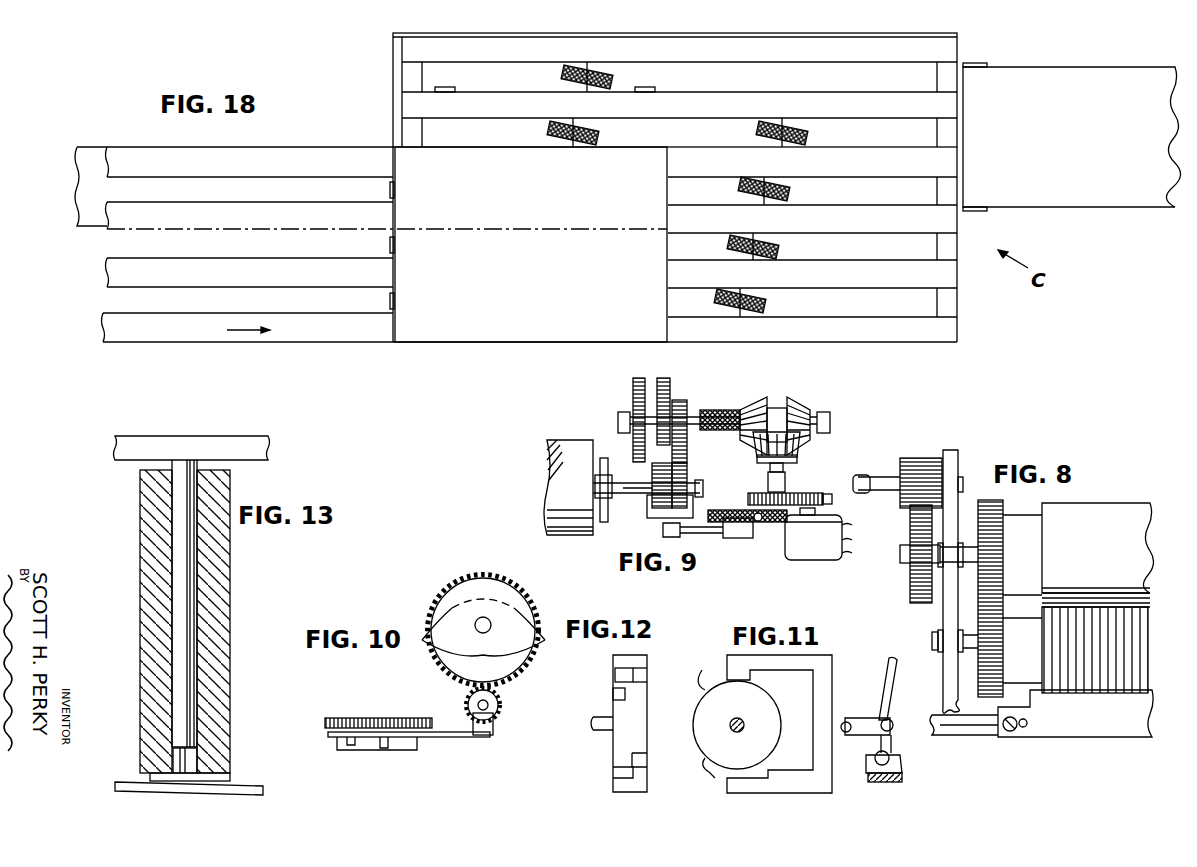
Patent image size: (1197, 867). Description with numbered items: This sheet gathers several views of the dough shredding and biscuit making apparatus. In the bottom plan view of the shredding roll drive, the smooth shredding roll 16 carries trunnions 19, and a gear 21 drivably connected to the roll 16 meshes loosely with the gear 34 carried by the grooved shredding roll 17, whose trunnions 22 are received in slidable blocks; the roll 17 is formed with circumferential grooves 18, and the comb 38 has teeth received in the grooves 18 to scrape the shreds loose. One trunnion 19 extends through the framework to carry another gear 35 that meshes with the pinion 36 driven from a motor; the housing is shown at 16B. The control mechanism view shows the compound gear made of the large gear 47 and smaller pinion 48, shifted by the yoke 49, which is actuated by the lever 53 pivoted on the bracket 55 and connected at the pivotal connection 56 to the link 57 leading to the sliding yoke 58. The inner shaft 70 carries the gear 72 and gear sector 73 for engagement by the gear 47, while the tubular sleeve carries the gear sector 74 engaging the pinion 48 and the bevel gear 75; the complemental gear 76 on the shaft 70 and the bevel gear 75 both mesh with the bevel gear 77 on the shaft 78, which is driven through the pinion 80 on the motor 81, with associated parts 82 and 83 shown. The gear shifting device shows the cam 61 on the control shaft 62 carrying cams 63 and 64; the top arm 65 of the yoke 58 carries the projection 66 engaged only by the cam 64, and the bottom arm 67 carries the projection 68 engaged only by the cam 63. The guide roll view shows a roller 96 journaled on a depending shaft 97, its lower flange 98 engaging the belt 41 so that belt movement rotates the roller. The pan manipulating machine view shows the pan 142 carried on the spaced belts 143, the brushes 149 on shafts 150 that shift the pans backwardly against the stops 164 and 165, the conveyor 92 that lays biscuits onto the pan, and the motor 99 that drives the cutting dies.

In FIG. 8, the shredding roll 16 is at (1145, 505).
In FIG. 18, the motor housing 16B is at (1032, 70).
In FIG. 8, the shredding roll 17 is at (1148, 625).
In FIG. 8, the circumferential grooves 18 is at (1140, 667).
In FIG. 8, the trunnions 19 is at (972, 566).
In FIG. 8, the gear 21 is at (1000, 501).
In FIG. 8, the trunnions 22 is at (972, 652).
In FIG. 8, the gear 34 is at (983, 690).
In FIG. 8, the gear 35 is at (912, 595).
In FIG. 8, the pinion 36 is at (923, 460).
In FIG. 8, the comb 38 is at (1150, 724).
In FIG. 13, the belt 41 is at (250, 792).
In FIG. 9, the large gear 47 is at (655, 476).
In FIG. 10, the pinion 48 is at (500, 707).
In FIG. 9, the pinion 48 is at (687, 476).
In FIG. 10, the yoke 49 is at (488, 730).
In FIG. 9, the yoke 49 is at (650, 519).
In FIG. 11, the lever 53 is at (897, 664).
In FIG. 11, the bracket 55 is at (905, 779).
In FIG. 11, the pivotal connection 56 is at (891, 718).
In FIG. 11, the link 57 is at (860, 718).
In FIG. 12, the yoke 58 is at (643, 660).
In FIG. 11, the yoke 58 is at (832, 673).
In FIG. 11, the cam 61 is at (702, 746).
In FIG. 12, the control shaft 62 is at (598, 730).
In FIG. 11, the control shaft 62 is at (737, 732).
In FIG. 12, the cam 63 is at (613, 692).
In FIG. 11, the cam 63 is at (695, 692).
In FIG. 12, the cam 64 is at (640, 755).
In FIG. 11, the cam 64 is at (716, 776).
In FIG. 11, the top arm 65 is at (827, 655).
In FIG. 12, the projection 66 is at (647, 673).
In FIG. 11, the bottom arm 67 is at (805, 758).
In FIG. 12, the projection 68 is at (613, 780).
In FIG. 9, the inner shaft 70 is at (777, 410).
In FIG. 9, the gear 72 is at (633, 385).
In FIG. 10, the gear sector 73 is at (495, 563).
In FIG. 9, the gear sector 73 is at (670, 385).
In FIG. 10, the gear sector 74 is at (520, 671).
In FIG. 9, the gear sector 74 is at (688, 442).
In FIG. 9, the bevel gear 75 is at (765, 372).
In FIG. 9, the complemental gear 76 is at (795, 397).
In FIG. 9, the bevel gear 77 is at (803, 452).
In FIG. 9, the shaft 78 is at (768, 481).
In FIG. 9, the pinion 80 is at (832, 499).
In FIG. 9, the motor 81 is at (788, 553).
In FIG. 9, the worm 82 is at (758, 522).
In FIG. 9, the bearing block 83 is at (748, 538).
In FIG. 18, the conveyor 92 is at (92, 224).
In FIG. 13, the rollers 96 is at (226, 602).
In FIG. 13, the shaft 97 is at (186, 572).
In FIG. 13, the flange 98 is at (228, 780).
In FIG. 9, the motor 99 is at (790, 494).
In FIG. 18, the pan 142 is at (447, 340).
In FIG. 18, the belts 143 is at (103, 342).
In FIG. 18, the brushes 149 is at (786, 192).
In FIG. 18, the shafts 150 is at (783, 120).
In FIG. 18, the stop 164 is at (395, 296).
In FIG. 18, the stop 165 is at (446, 87).